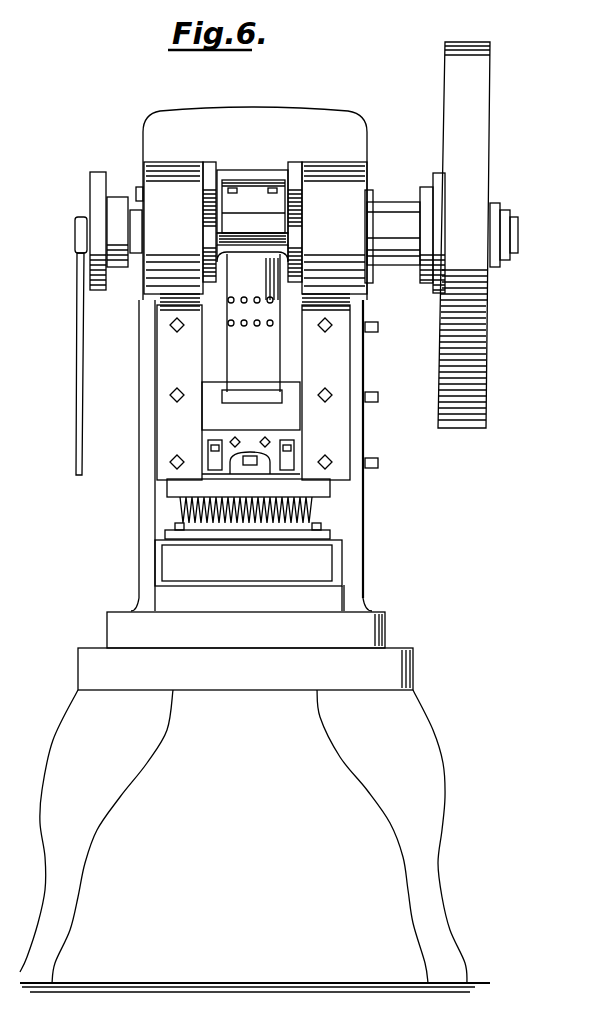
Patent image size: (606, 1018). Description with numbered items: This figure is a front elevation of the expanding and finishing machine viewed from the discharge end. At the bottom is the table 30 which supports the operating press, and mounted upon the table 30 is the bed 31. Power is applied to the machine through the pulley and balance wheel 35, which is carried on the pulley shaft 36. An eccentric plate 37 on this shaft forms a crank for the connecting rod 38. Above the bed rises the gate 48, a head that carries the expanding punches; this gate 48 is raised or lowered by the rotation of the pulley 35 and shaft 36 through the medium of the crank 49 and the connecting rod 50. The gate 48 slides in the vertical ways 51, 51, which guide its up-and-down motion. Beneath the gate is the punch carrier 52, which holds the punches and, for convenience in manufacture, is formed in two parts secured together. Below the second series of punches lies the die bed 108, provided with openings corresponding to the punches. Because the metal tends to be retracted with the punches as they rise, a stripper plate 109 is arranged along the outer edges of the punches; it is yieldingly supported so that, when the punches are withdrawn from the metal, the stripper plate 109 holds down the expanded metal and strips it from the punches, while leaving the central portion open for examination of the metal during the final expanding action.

The table 30 is at (385, 668).
The bed 31 is at (363, 629).
The pulley and balance wheel 35 is at (468, 121).
The pulley shaft 36 is at (388, 210).
The eccentric plate 37 is at (100, 190).
The connecting rod 38 is at (78, 343).
The gate 48 is at (251, 337).
The crank 49 is at (292, 172).
The connecting rod 50 is at (250, 274).
The vertical ways 51 is at (170, 359).
The punch carrier 52 is at (330, 486).
The die bed 108 is at (170, 560).
The stripper plate 109 is at (274, 539).